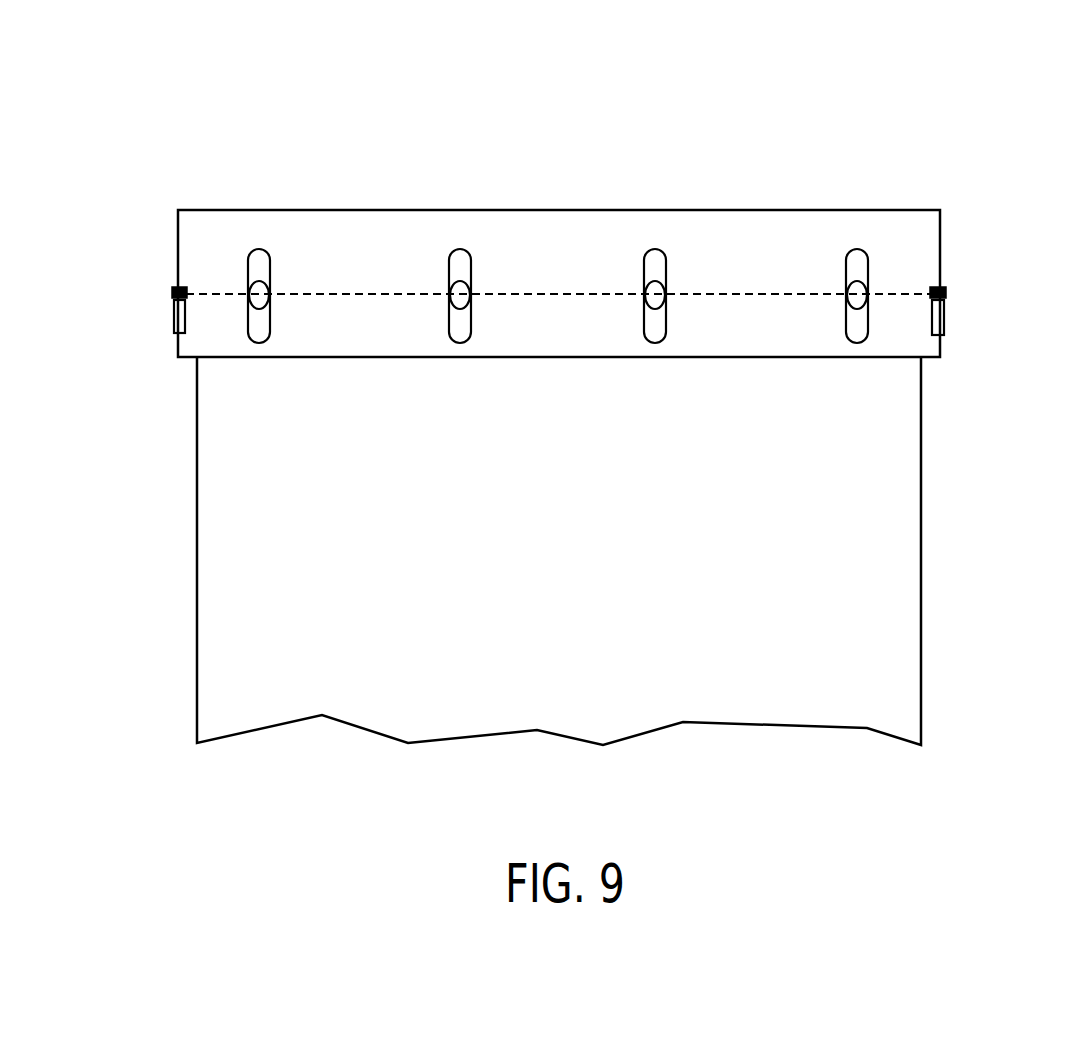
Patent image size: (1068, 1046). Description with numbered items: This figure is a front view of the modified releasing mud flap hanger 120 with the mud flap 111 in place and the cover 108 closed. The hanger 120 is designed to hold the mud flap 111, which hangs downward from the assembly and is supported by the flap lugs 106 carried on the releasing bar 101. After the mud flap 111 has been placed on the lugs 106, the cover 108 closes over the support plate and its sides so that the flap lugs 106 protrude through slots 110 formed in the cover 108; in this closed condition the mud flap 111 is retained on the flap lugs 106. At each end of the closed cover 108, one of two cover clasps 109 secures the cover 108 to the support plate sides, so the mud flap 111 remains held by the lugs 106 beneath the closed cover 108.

The releasing mud flap hanger 120 is at (585, 184).
The cover 108 is at (213, 228).
The slots 110 is at (460, 260).
The flap lugs 106 is at (655, 290).
The cover clasps 109 is at (170, 322).
The releasing bar 101 is at (948, 293).
The mud flap 111 is at (922, 487).